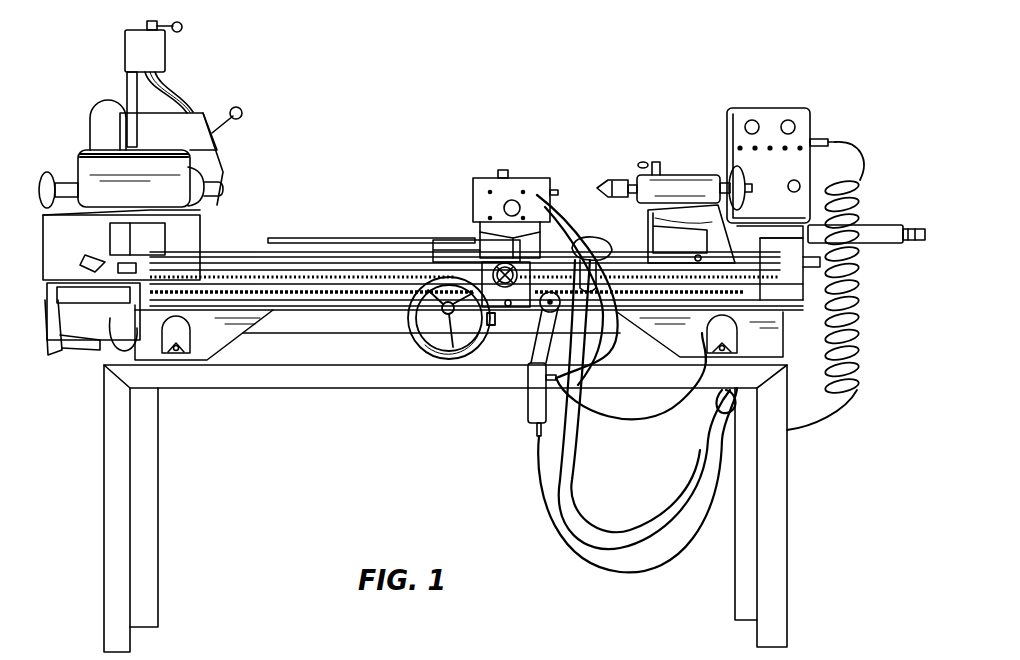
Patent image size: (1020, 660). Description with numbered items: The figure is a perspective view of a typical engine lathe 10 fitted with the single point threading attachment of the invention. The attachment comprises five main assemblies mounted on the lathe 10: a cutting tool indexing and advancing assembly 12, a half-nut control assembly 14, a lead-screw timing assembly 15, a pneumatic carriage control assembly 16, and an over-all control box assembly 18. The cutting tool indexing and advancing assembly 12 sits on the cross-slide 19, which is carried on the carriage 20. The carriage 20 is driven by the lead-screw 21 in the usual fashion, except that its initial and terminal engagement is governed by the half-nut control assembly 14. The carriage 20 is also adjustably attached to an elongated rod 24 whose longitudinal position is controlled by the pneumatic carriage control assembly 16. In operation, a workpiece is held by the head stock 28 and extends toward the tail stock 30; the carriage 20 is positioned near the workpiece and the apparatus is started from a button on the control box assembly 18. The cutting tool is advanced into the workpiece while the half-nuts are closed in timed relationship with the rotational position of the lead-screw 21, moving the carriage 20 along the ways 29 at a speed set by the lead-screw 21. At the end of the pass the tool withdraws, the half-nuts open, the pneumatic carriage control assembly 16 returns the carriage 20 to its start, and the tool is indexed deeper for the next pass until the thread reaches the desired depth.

The engine lathe 10 is at (503, 89).
The cutting tool indexing and advancing assembly 12 is at (488, 157).
The half-nut control assembly 14 is at (522, 398).
The lead-screw timing assembly 15 is at (617, 221).
The pneumatic carriage control assembly 16 is at (866, 214).
The control box assembly 18 is at (770, 93).
The cross-slide 19 is at (493, 230).
The carriage 20 is at (427, 330).
The lead-screw 21 is at (327, 303).
The elongated rod 24 is at (303, 238).
The head stock 28 is at (270, 172).
The ways 29 is at (377, 273).
The tail stock 30 is at (617, 181).